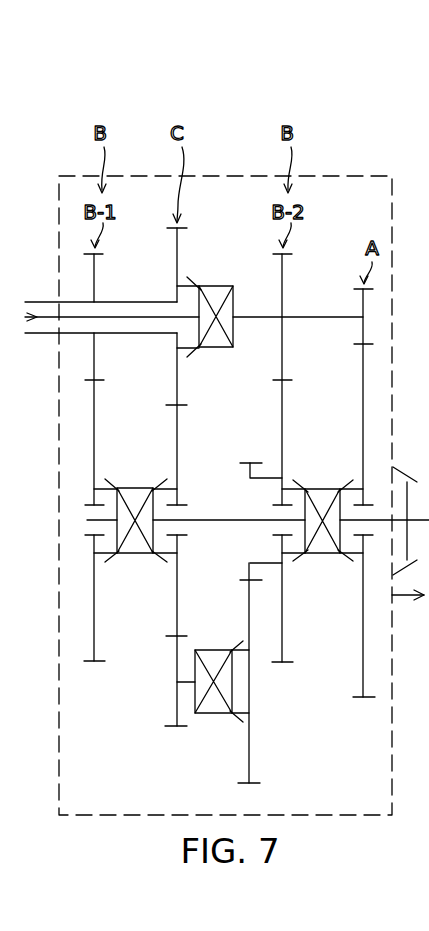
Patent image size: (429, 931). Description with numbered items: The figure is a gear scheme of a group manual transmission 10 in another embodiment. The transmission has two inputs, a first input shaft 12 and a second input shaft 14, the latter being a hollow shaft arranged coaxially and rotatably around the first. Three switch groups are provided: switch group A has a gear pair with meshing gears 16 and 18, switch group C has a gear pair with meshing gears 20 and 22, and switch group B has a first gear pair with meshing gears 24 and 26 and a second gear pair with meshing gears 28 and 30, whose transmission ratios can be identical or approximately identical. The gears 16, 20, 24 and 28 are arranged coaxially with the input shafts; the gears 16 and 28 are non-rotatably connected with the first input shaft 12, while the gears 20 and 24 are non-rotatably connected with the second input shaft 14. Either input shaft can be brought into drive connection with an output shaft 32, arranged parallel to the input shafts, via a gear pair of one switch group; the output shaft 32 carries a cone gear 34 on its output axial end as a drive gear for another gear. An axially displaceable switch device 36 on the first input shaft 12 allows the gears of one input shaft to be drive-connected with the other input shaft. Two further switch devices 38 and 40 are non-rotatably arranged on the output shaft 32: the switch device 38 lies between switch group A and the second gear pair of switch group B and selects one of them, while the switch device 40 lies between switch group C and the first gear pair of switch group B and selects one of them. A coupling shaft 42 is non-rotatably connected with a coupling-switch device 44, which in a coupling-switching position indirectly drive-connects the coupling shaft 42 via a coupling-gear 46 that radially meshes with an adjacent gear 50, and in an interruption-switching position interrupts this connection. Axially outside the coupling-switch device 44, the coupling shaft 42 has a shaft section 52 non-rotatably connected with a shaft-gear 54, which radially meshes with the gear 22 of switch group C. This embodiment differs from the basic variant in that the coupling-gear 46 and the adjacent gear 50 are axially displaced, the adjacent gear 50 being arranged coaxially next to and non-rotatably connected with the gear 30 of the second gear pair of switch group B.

The group manual transmission 10 is at (239, 104).
The first input shaft 12 is at (45, 320).
The second input shaft 14 is at (45, 301).
The gear 16 is at (365, 305).
The gear 18 is at (365, 364).
The gear 20 is at (178, 252).
The gear 22 is at (177, 433).
The gear 24 is at (95, 278).
The gear 26 is at (94, 412).
The gear 28 is at (283, 283).
The gear 30 is at (283, 412).
The output shaft 32 is at (212, 519).
The cone gear 34 is at (398, 467).
The switch device 36 is at (223, 348).
The switch device 38 is at (318, 489).
The switch device 40 is at (126, 554).
The coupling shaft 42 is at (187, 690).
The coupling-switch device 44 is at (215, 715).
The coupling-gear 46 is at (251, 754).
The adjacent gear 50 is at (249, 566).
The shaft section 52 is at (179, 681).
The shaft-gear 54 is at (176, 655).